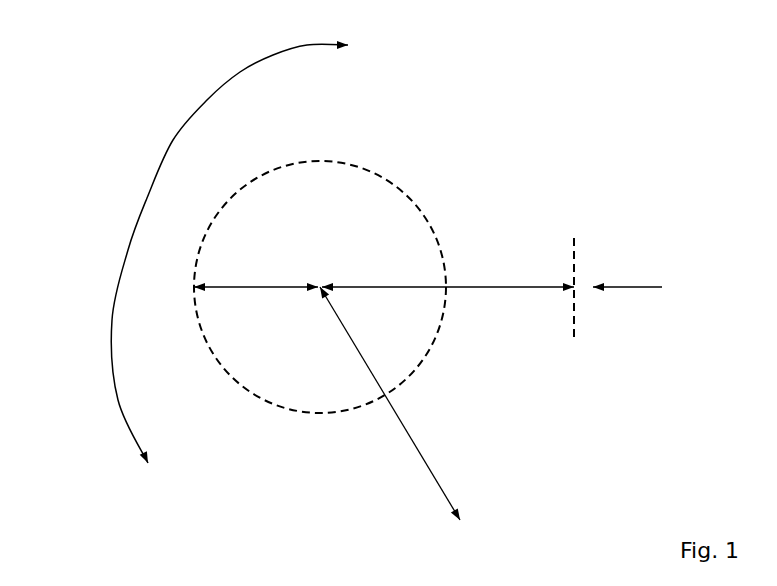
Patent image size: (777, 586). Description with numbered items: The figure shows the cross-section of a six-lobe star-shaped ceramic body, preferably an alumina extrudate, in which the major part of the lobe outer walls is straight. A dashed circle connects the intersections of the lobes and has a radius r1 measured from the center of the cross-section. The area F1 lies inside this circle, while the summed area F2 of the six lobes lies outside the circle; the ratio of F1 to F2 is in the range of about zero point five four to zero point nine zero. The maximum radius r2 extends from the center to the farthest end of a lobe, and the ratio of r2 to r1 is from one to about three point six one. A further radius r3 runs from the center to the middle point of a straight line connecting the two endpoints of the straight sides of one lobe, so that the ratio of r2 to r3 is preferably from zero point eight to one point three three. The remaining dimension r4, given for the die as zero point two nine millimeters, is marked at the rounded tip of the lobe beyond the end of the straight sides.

The area inside the circle F1 is at (320, 287).
The summed area of the lobes outside the circle F2 is at (160, 178).
The radius of the circle connecting the intersections of the lobes r1 is at (256, 274).
The maximum radius r2 is at (390, 403).
The radius to the endpoints of the straight part of the lobes r3 is at (448, 274).
The die dimension r4 is at (618, 288).